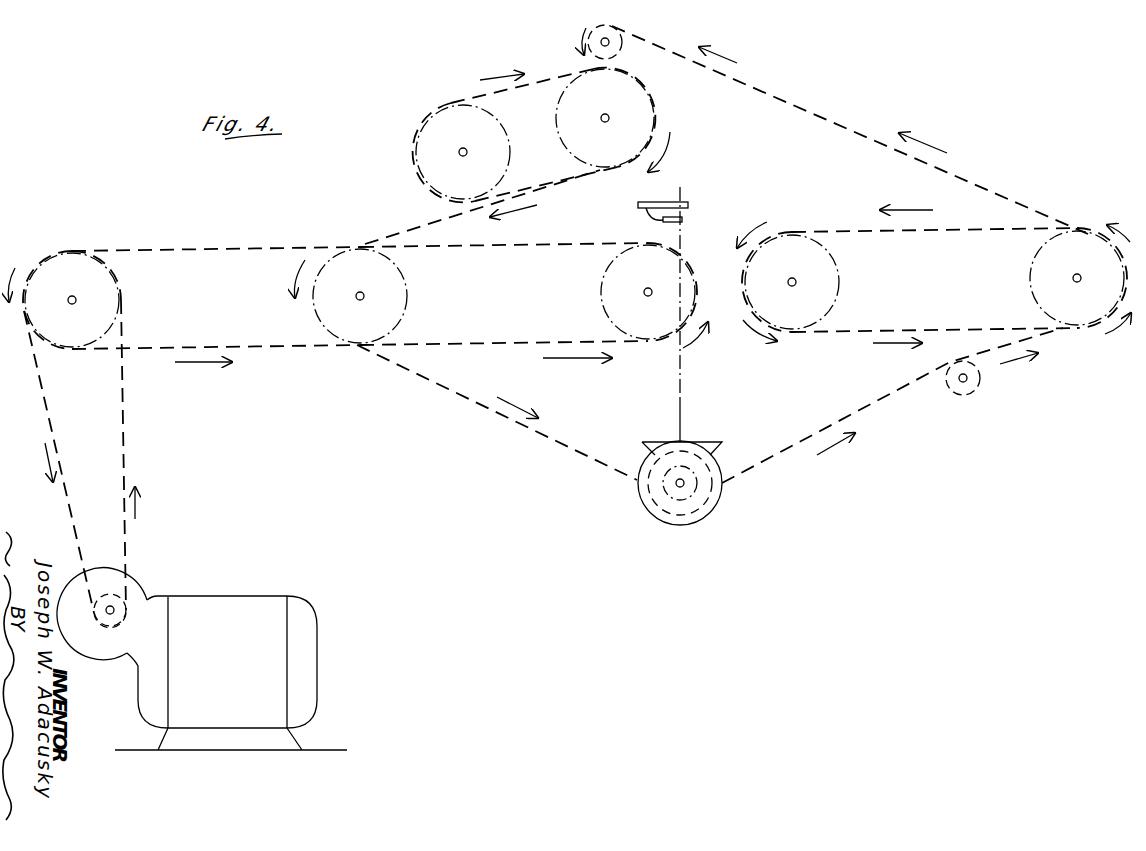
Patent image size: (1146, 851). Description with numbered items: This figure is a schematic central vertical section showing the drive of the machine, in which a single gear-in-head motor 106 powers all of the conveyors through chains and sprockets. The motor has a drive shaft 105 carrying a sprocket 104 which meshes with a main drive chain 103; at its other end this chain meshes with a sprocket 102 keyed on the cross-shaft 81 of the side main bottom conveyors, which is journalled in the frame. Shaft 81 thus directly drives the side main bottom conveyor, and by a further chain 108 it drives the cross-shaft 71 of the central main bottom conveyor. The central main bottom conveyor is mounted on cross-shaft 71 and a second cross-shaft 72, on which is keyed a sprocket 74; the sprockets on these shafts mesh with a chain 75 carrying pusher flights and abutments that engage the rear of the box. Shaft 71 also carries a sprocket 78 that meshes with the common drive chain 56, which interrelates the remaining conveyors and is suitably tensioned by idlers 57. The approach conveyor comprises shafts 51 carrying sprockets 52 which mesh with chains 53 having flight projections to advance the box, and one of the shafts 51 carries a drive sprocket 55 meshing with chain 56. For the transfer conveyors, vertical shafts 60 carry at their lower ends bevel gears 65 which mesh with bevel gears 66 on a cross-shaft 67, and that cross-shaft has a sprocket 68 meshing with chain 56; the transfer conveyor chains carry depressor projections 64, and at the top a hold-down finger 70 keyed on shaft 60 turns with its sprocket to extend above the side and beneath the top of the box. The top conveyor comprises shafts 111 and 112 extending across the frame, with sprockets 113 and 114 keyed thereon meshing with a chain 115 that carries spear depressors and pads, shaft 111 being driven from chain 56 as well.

The shafts 51 is at (794, 282).
The sprockets 52 is at (836, 262).
The chains 53 is at (823, 232).
The drive sprocket 55 is at (1090, 232).
The drive chain 56 is at (878, 405).
The idlers 57 is at (617, 42).
The vertical shafts 60 is at (680, 397).
The depressor projections 64 is at (659, 198).
The bevel gears 65 is at (722, 443).
The bevel gears 66 is at (712, 498).
The cross-shaft 67 is at (676, 487).
The sprocket 68 is at (667, 481).
The hold-down finger 70 is at (645, 211).
The cross-shaft 71 is at (364, 300).
The cross-shaft 72 is at (646, 292).
The sprocket 74 is at (608, 270).
The chain 75 is at (492, 247).
The sprocket 78 is at (322, 308).
The cross-shaft 81 is at (76, 304).
The sprocket 102 is at (122, 307).
The main drive chain 103 is at (124, 444).
The sprocket 104 is at (112, 608).
The drive shaft 105 is at (122, 607).
The gear-in-head motor 106 is at (231, 673).
The chain 108 is at (200, 251).
The shaft 111 is at (607, 118).
The shaft 112 is at (461, 153).
The sprocket 113 is at (575, 84).
The sprocket 114 is at (500, 154).
The chain 115 is at (533, 83).